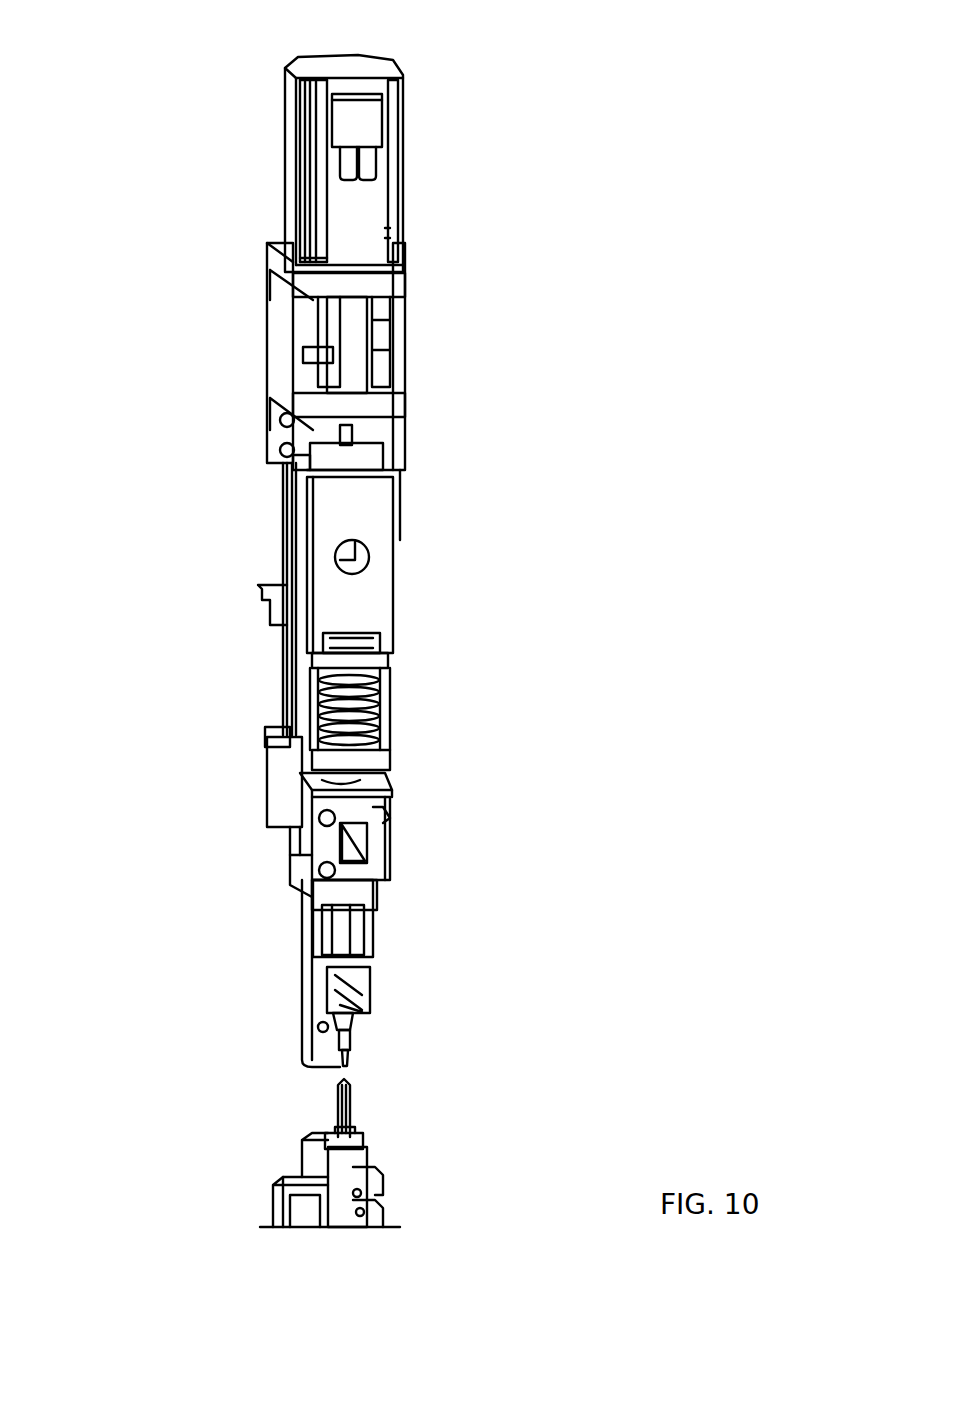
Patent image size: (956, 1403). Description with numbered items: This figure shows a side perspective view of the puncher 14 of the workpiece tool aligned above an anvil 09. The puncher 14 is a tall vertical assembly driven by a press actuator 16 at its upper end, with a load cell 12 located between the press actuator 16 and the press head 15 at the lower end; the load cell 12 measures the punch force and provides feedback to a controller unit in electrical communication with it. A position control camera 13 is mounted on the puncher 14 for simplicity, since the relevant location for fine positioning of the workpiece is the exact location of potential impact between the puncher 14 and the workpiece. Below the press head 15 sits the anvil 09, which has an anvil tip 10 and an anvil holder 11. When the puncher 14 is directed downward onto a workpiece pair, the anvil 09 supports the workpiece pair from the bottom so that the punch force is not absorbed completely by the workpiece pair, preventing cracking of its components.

The puncher 14 is at (498, 50).
The press actuator 16 is at (248, 177).
The position control camera 13 is at (346, 618).
The load cell 12 is at (398, 968).
The press head 15 is at (357, 1058).
The anvil 09 is at (213, 1175).
The anvil tip 10 is at (327, 1110).
The anvil holder 11 is at (362, 1107).